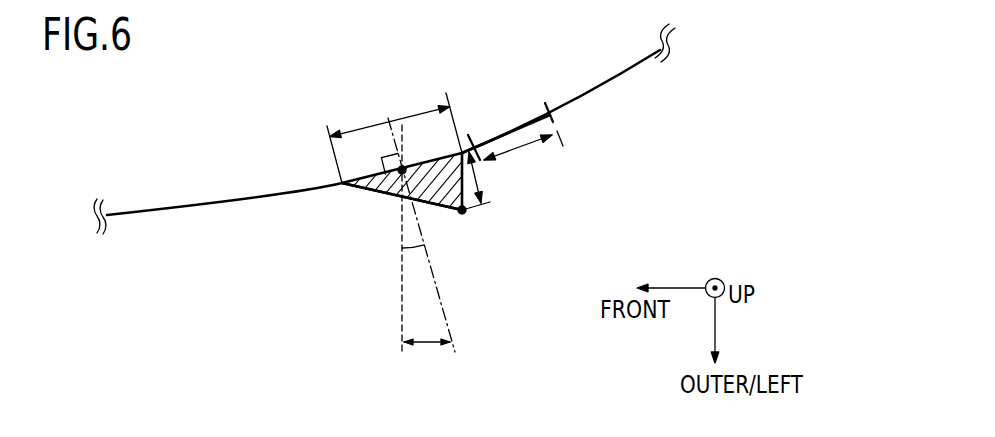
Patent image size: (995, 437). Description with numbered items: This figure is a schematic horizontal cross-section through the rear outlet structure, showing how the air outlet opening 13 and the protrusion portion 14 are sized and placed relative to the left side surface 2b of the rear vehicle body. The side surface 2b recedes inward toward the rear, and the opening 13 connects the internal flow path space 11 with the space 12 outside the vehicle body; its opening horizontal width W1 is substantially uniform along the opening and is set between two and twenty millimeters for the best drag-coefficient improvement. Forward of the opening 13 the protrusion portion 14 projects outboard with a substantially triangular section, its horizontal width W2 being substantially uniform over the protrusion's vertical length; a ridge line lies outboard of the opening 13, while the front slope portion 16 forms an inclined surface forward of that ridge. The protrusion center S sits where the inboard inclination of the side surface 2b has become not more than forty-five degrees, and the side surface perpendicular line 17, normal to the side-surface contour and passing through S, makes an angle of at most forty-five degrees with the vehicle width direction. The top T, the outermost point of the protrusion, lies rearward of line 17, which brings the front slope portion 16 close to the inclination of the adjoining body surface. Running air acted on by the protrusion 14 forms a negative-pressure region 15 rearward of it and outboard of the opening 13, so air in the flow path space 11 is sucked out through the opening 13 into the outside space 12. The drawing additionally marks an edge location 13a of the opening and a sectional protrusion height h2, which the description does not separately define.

The left side surface 2b is at (297, 193).
The internal flow path space 11 is at (528, 72).
The space outside of the vehicle body 12 is at (590, 263).
The air outlet opening 13 is at (522, 100).
The edge of inclined portion 13a is at (477, 142).
The protrusion portion 14 is at (446, 212).
The negative-pressure region 15 is at (627, 193).
The front slope portion 16 is at (380, 193).
The side surface perpendicular line 17 is at (452, 319).
The protrusion center S is at (404, 166).
The top of the protrusion portion T is at (464, 213).
The opening horizontal width W1 is at (518, 139).
The horizontal width of the protrusion portion W2 is at (394, 135).
The height h2 is at (482, 178).